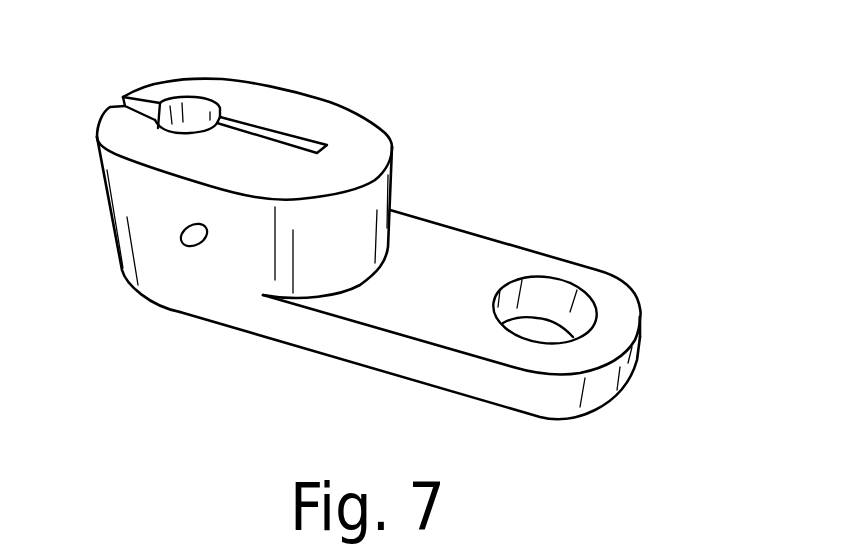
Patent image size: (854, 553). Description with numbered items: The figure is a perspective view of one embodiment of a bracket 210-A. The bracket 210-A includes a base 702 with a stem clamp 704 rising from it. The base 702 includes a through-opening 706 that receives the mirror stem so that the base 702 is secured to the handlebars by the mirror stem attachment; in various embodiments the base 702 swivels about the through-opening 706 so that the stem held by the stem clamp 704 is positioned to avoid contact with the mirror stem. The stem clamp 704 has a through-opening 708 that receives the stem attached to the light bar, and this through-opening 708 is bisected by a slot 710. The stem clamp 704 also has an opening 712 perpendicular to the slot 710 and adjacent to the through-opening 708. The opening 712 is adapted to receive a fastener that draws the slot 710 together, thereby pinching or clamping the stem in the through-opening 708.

The bracket 210-A is at (627, 120).
The base 702 is at (547, 250).
The stem clamp 704 is at (343, 103).
The through-opening 706 is at (588, 297).
The through-opening 708 is at (193, 98).
The slot 710 is at (277, 132).
The opening 712 is at (198, 246).